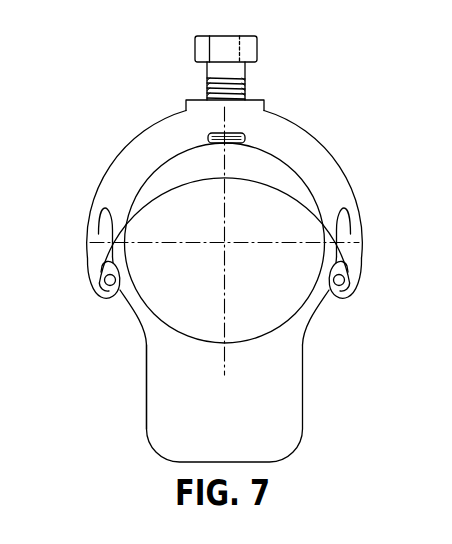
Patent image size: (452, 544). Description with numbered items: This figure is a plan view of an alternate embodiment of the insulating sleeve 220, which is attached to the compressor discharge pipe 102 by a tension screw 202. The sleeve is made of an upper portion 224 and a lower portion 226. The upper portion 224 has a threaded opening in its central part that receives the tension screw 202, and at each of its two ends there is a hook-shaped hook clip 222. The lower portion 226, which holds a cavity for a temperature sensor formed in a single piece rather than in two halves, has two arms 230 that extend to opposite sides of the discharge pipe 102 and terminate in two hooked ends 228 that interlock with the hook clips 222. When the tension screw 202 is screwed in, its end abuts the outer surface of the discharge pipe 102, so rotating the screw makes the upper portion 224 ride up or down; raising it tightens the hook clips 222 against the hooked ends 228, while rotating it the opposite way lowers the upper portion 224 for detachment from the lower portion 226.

The tension screw 202 is at (195, 52).
The upper portion 224 is at (160, 122).
The discharge pipe 102 is at (272, 155).
The hooked ends 228 is at (96, 218).
The hook clips 222 is at (110, 297).
The arms 230 is at (134, 299).
The insulating sleeve 220 is at (303, 412).
The lower portion 226 is at (146, 412).